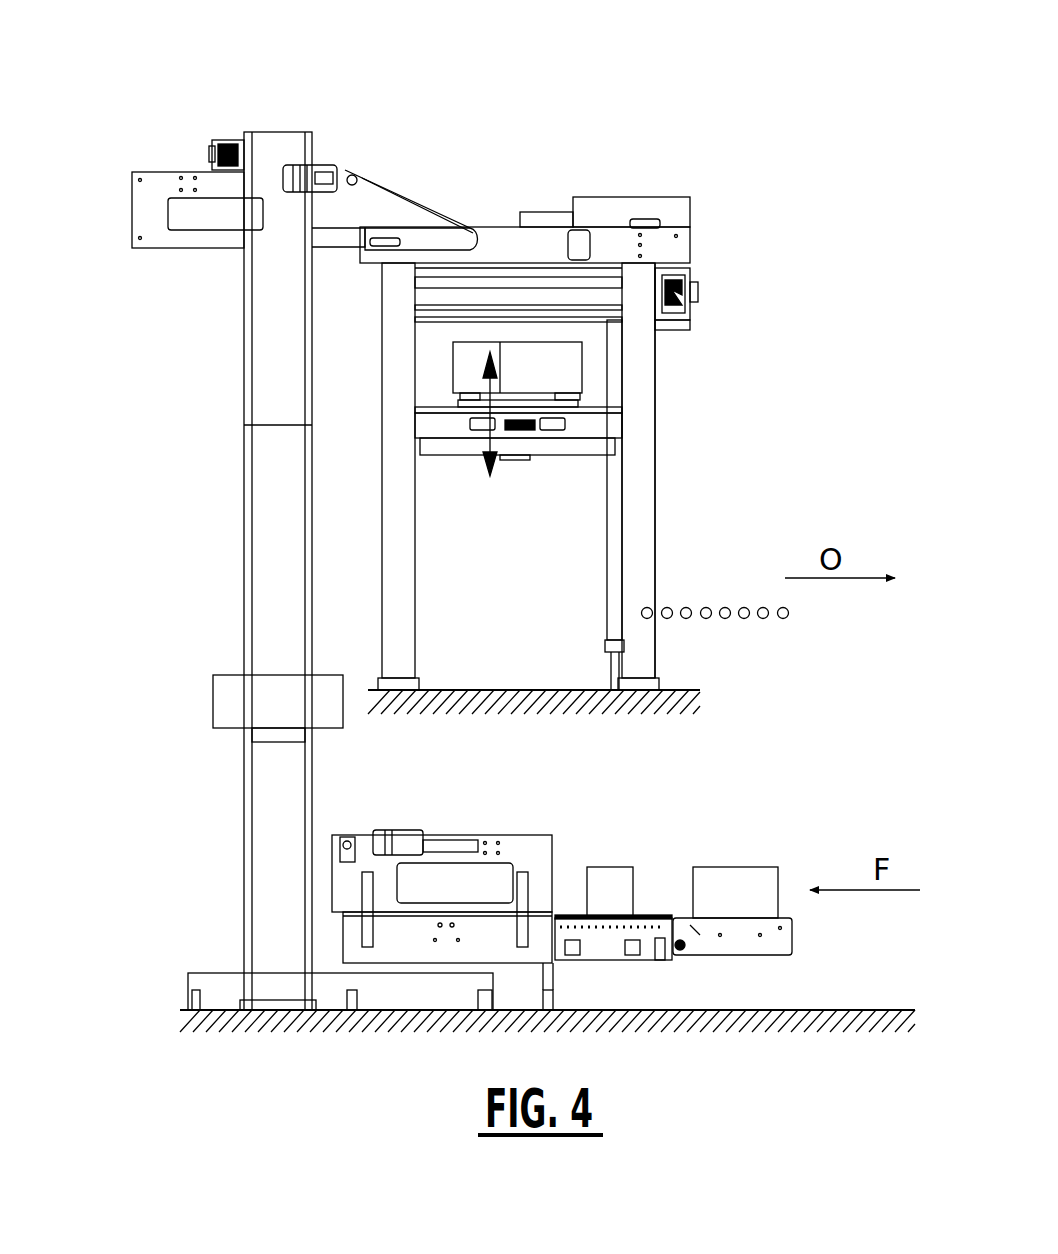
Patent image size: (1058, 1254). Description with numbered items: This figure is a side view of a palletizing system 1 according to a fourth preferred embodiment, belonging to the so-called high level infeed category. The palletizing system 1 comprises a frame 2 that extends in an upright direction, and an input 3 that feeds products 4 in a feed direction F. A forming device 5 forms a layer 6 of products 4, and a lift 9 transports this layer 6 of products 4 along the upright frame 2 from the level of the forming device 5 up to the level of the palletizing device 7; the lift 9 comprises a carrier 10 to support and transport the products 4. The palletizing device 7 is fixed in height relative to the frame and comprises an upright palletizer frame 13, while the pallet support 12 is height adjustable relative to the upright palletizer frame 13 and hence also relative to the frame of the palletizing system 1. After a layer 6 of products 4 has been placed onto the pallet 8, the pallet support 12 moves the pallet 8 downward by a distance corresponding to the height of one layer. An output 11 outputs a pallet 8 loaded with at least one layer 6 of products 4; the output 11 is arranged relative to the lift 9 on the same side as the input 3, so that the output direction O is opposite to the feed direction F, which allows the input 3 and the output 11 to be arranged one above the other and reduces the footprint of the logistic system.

The palletizing system 1 is at (812, 192).
The frame 2 is at (230, 115).
The input 3 is at (740, 945).
The products 4 is at (613, 880).
The forming device 5 is at (478, 820).
The layer of products 6 is at (185, 691).
The palletizing device 7 is at (730, 355).
The pallet 8 is at (455, 405).
The lift 9 is at (268, 465).
The carrier 10 is at (225, 740).
The output 11 is at (727, 607).
The pallet support 12 is at (600, 430).
The upright palletizer frame 13 is at (645, 533).